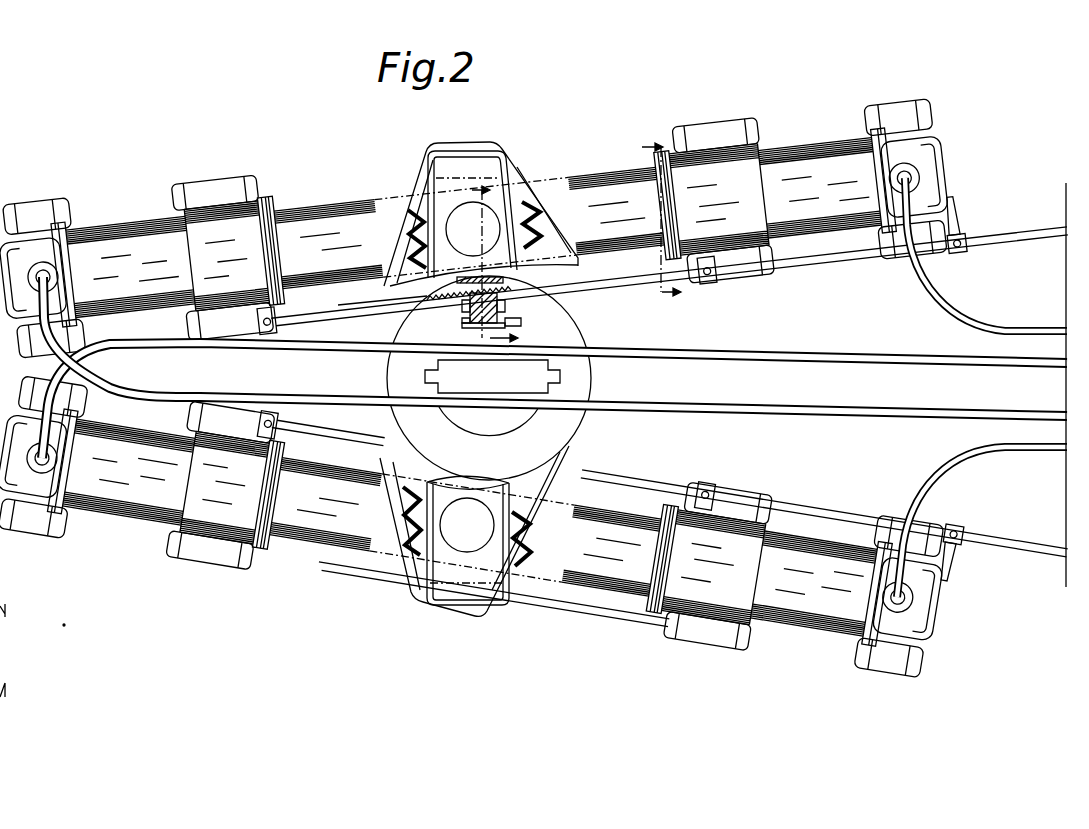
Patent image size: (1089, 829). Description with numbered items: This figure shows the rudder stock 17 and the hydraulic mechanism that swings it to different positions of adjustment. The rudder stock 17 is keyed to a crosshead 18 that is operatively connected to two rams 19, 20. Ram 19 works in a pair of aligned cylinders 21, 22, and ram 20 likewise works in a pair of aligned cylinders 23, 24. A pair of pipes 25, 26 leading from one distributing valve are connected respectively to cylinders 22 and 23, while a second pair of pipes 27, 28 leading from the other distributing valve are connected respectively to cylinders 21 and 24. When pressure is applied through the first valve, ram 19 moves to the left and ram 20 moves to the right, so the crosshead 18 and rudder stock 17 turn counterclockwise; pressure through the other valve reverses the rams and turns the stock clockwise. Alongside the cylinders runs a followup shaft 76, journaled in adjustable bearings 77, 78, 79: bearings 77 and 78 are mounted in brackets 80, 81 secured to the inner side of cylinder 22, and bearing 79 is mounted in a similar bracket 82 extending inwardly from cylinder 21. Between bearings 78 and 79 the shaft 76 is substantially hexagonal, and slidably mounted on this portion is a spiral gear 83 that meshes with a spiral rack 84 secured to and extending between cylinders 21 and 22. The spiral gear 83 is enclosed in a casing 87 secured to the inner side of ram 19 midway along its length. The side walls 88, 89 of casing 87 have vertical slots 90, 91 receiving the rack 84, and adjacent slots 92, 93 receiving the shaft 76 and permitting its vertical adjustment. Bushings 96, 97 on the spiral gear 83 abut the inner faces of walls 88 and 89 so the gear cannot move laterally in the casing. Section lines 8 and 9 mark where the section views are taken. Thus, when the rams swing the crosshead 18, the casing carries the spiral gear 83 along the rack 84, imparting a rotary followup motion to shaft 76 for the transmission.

The section line 8- 8 is at (500, 265).
The section line 9- 9 is at (661, 219).
The rudder stock 17 is at (492, 376).
The crosshead 18 is at (577, 447).
The ram 19 is at (573, 187).
The ram 20 is at (613, 583).
The cylinder 21 is at (133, 224).
The cylinder 22 is at (822, 150).
The cylinder 23 is at (140, 517).
The cylinder 24 is at (837, 625).
The pipe 25 is at (1023, 328).
The pipe 26 is at (940, 333).
The pipe 27 is at (940, 418).
The pipe 28 is at (1017, 448).
The followup shaft 76 is at (828, 263).
The adjustable bearing 77 is at (958, 252).
The adjustable bearing 78 is at (694, 290).
The adjustable bearing 79 is at (263, 332).
The bracket 80 is at (953, 228).
The bracket 81 is at (718, 278).
The bracket 82 is at (230, 321).
The spiral gear 83 is at (483, 336).
The spiral rack 84 is at (362, 306).
The casing 87 is at (513, 323).
The side wall 88 is at (470, 317).
The side wall 89 is at (500, 317).
The vertical slot 90 is at (478, 278).
The vertical slot 91 is at (493, 277).
The slot 92 is at (470, 310).
The slot 93 is at (498, 307).
The bushing 96 is at (468, 296).
The bushing 97 is at (503, 287).